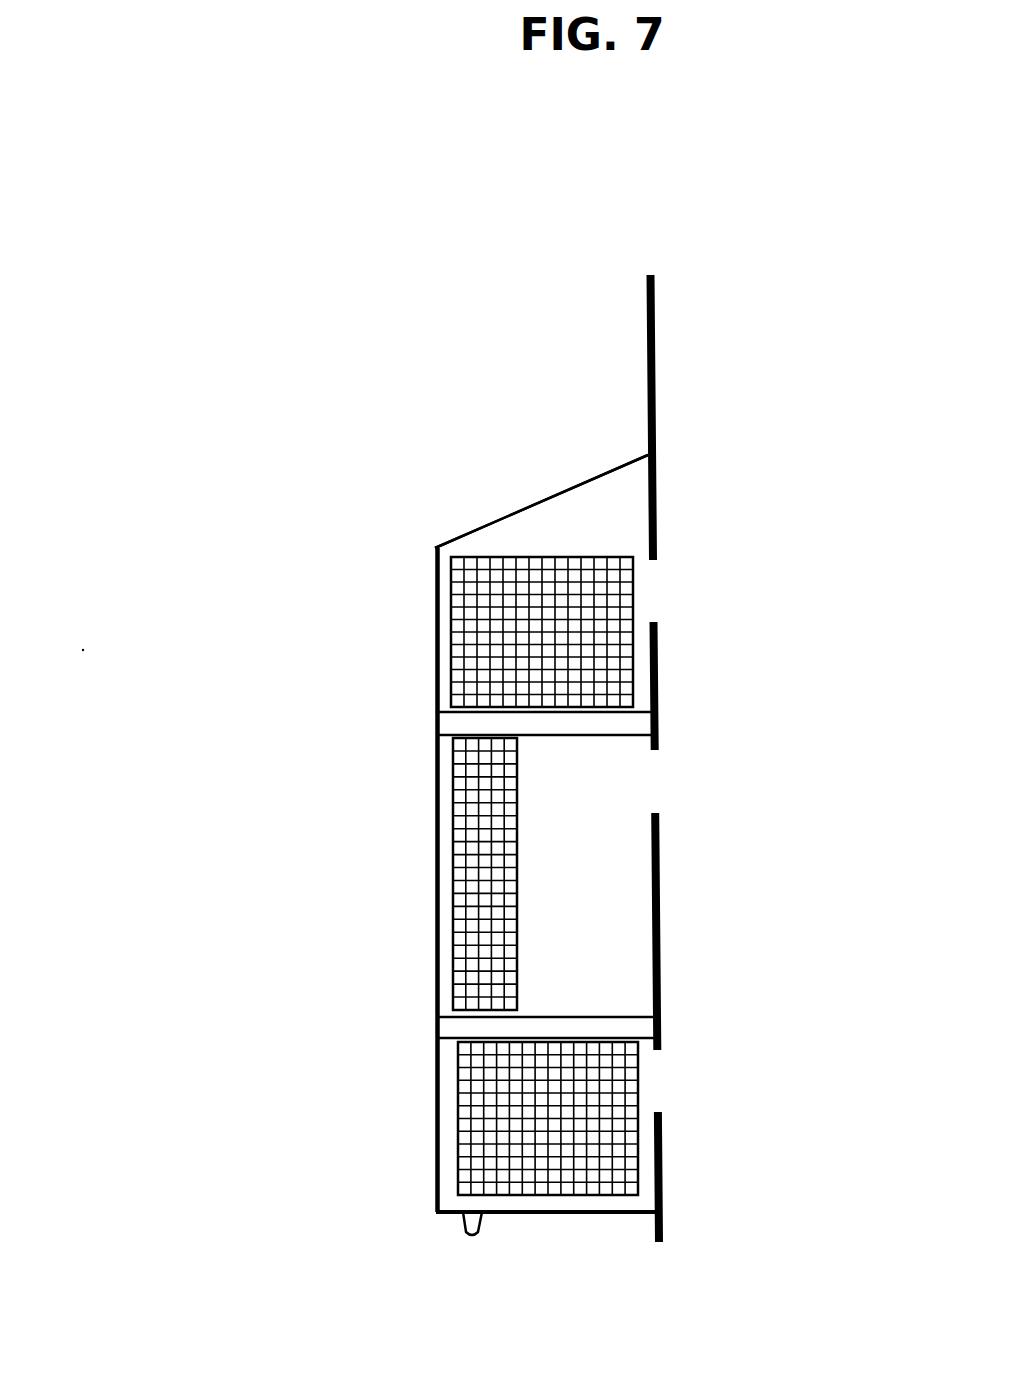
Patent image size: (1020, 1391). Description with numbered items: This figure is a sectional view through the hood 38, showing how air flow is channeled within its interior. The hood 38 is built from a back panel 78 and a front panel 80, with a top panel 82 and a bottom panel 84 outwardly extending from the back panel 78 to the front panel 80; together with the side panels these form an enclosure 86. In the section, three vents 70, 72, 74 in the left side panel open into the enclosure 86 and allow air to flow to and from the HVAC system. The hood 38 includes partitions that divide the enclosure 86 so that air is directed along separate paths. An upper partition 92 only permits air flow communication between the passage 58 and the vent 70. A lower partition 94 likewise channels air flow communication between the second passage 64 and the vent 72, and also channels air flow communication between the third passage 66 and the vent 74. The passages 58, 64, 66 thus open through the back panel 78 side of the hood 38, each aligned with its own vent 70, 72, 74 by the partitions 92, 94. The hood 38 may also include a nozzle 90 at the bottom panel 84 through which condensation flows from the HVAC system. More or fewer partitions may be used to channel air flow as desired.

The hood 38 is at (165, 278).
The back panel 78 is at (658, 297).
The top panel 82 is at (572, 488).
The front panel 80 is at (432, 566).
The bottom panel 84 is at (585, 1212).
The nozzle 90 is at (463, 1228).
The vent 70 is at (456, 612).
The vent 72 is at (456, 795).
The vent 74 is at (458, 1092).
The upper partition 92 is at (645, 710).
The lower partition 94 is at (455, 1028).
The passage 58 is at (660, 582).
The second passage 64 is at (667, 775).
The enclosure 86 is at (597, 903).
The third passage 66 is at (668, 1075).